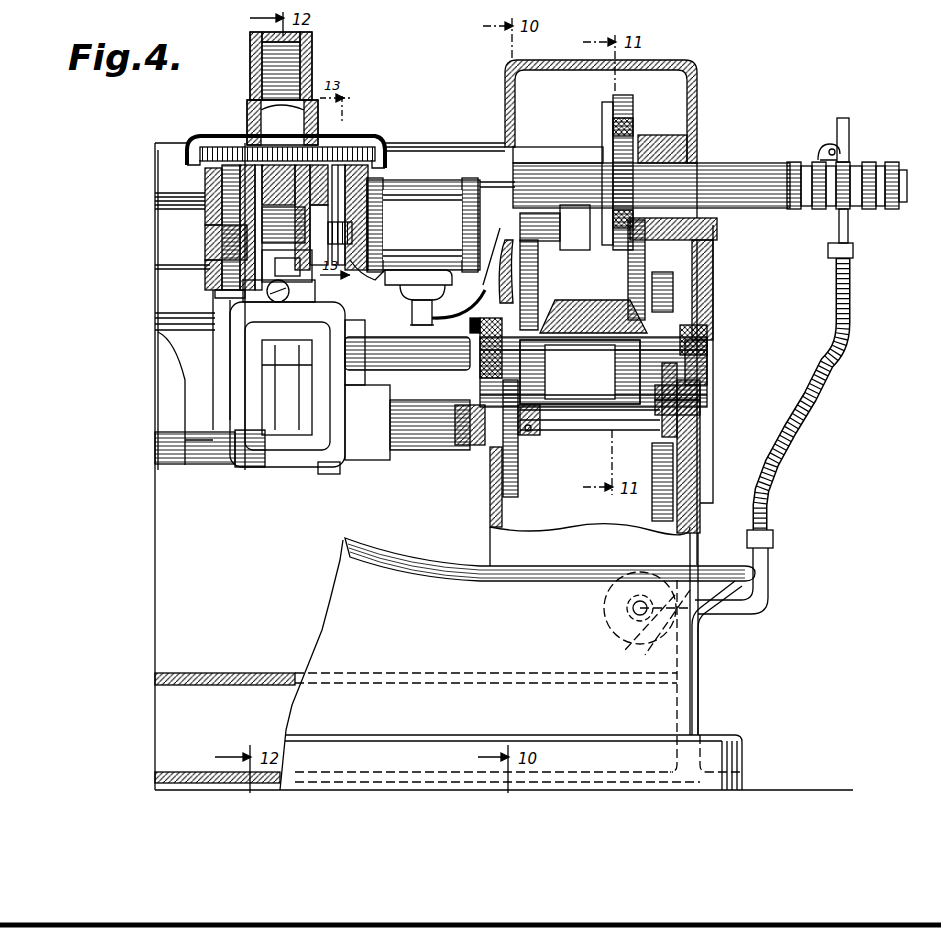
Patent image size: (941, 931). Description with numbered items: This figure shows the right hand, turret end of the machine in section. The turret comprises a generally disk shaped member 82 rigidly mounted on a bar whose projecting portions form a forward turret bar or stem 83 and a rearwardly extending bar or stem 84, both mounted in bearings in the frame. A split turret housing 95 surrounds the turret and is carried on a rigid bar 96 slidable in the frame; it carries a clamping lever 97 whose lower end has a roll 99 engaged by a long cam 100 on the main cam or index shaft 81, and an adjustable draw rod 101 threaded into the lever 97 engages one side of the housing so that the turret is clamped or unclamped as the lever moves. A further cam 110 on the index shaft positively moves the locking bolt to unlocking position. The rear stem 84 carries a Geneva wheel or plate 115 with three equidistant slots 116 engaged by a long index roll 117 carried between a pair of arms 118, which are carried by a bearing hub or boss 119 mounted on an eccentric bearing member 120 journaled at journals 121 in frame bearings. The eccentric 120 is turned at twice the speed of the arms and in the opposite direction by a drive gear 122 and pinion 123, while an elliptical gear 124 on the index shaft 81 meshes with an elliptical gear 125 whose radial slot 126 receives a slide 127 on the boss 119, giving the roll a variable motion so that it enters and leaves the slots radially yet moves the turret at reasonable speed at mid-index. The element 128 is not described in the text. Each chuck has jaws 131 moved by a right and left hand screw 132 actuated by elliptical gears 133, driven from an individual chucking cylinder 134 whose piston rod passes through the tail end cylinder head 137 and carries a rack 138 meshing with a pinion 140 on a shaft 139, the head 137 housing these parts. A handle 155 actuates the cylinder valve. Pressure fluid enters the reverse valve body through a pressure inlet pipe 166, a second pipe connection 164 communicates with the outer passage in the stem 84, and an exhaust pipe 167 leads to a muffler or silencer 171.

The main cam or index shaft 81 is at (428, 445).
The disk shaped member 82 is at (262, 88).
The forward turret bar or stem 83 is at (157, 193).
The rearwardly extending bar or stem 84 is at (733, 171).
The split turret housing 95 is at (312, 45).
The rigid bar 96 is at (409, 371).
The clamping lever 97 is at (300, 448).
The roll 99 is at (330, 474).
The long cam 100 is at (255, 458).
The adjustable draw rod 101 is at (290, 291).
The cam 110 is at (183, 466).
The Geneva wheel or plate 115 is at (630, 110).
The slots 116 is at (626, 155).
The index roll 117 is at (570, 245).
The arms 118 is at (528, 274).
The bearing hub or boss 119 is at (588, 316).
The eccentric bearing member 120 is at (627, 365).
The journals 121 is at (695, 343).
The drive gear 122 is at (511, 494).
The pinion 123 is at (480, 313).
The elliptical gear 124 is at (654, 513).
The elliptical gear 125 is at (672, 289).
The radial slot 126 is at (660, 393).
The slide 127 is at (660, 415).
The coupling 128 is at (460, 398).
The jaws 131 is at (206, 246).
The right and left hand screw 132 is at (206, 277).
The elliptical gears 133 is at (368, 148).
The chucking cylinder 134 is at (460, 226).
The tail end cylinder head 137 is at (388, 206).
The rack 138 is at (405, 186).
The shaft 139 is at (382, 162).
The pinion 140 is at (360, 270).
The handle 155 is at (498, 256).
The second pipe connection 164 is at (820, 158).
The pressure inlet pipe 166 is at (850, 133).
The exhaust pipe 167 is at (797, 419).
The muffler or silencer 171 is at (612, 618).